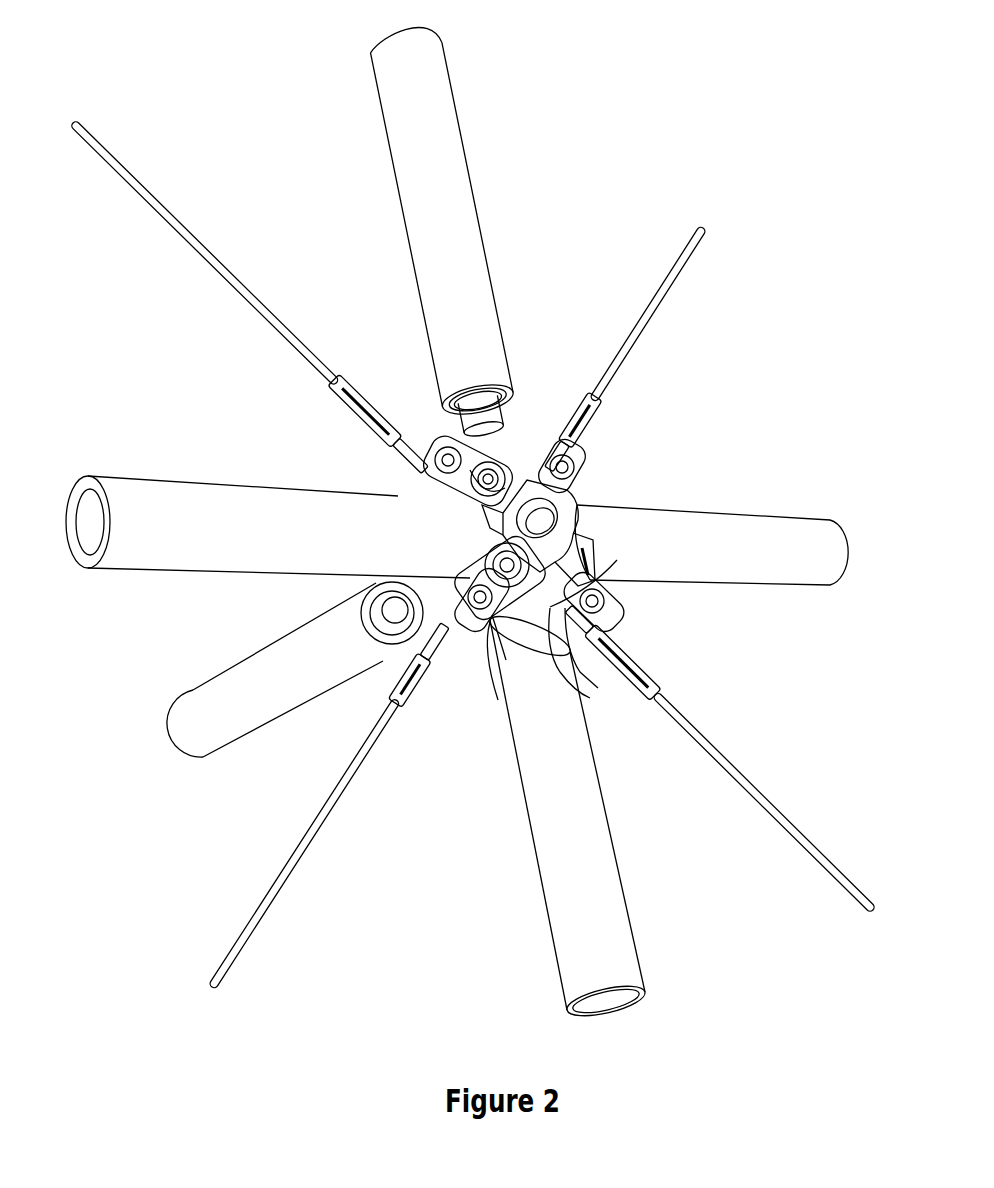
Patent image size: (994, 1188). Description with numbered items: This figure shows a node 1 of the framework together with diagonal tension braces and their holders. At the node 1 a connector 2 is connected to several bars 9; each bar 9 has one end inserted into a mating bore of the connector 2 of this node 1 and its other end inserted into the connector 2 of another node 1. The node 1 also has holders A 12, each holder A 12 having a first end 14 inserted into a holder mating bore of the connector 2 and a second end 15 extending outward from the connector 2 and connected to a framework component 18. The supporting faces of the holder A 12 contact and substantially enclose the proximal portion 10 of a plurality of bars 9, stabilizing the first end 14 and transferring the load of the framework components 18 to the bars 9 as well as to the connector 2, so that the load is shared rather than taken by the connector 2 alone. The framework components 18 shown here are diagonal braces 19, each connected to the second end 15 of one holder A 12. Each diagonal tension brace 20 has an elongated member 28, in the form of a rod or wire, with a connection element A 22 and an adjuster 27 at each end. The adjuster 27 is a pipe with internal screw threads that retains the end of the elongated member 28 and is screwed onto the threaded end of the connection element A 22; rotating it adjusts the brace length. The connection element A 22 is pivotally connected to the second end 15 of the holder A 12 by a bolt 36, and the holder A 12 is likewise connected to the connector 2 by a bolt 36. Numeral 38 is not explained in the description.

The node 1 is at (453, 777).
The connector 2 is at (566, 508).
The bar 9 is at (490, 290).
The proximal portion of bar 10 is at (455, 418).
The holder A 12 is at (505, 462).
The first end of holder A 14 is at (430, 490).
The second end of holder A 15 is at (440, 452).
The framework component 18 is at (292, 305).
The diagonal brace 19 is at (637, 287).
The diagonal tension brace 20 is at (614, 332).
The connection element A 22 is at (400, 452).
The adjuster 27 is at (365, 400).
The elongated member 28 is at (232, 283).
The bolt 36 is at (586, 666).
The socket 38 is at (492, 462).